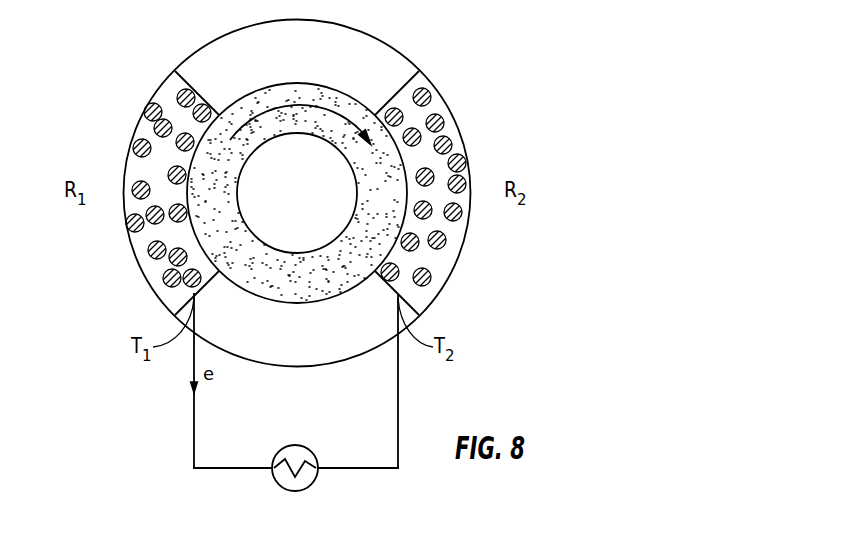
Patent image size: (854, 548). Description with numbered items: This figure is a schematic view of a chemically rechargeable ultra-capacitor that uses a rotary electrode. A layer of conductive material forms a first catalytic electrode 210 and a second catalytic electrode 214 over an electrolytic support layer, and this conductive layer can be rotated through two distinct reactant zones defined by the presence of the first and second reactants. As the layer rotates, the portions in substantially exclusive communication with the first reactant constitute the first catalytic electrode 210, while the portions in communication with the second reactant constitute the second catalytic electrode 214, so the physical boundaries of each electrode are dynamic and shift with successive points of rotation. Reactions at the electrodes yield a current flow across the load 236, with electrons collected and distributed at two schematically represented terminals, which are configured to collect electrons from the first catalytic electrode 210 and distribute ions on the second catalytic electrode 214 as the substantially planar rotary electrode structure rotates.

The first catalytic electrode 210 is at (162, 99).
The second catalytic electrode 214 is at (432, 108).
The load 236 is at (322, 459).